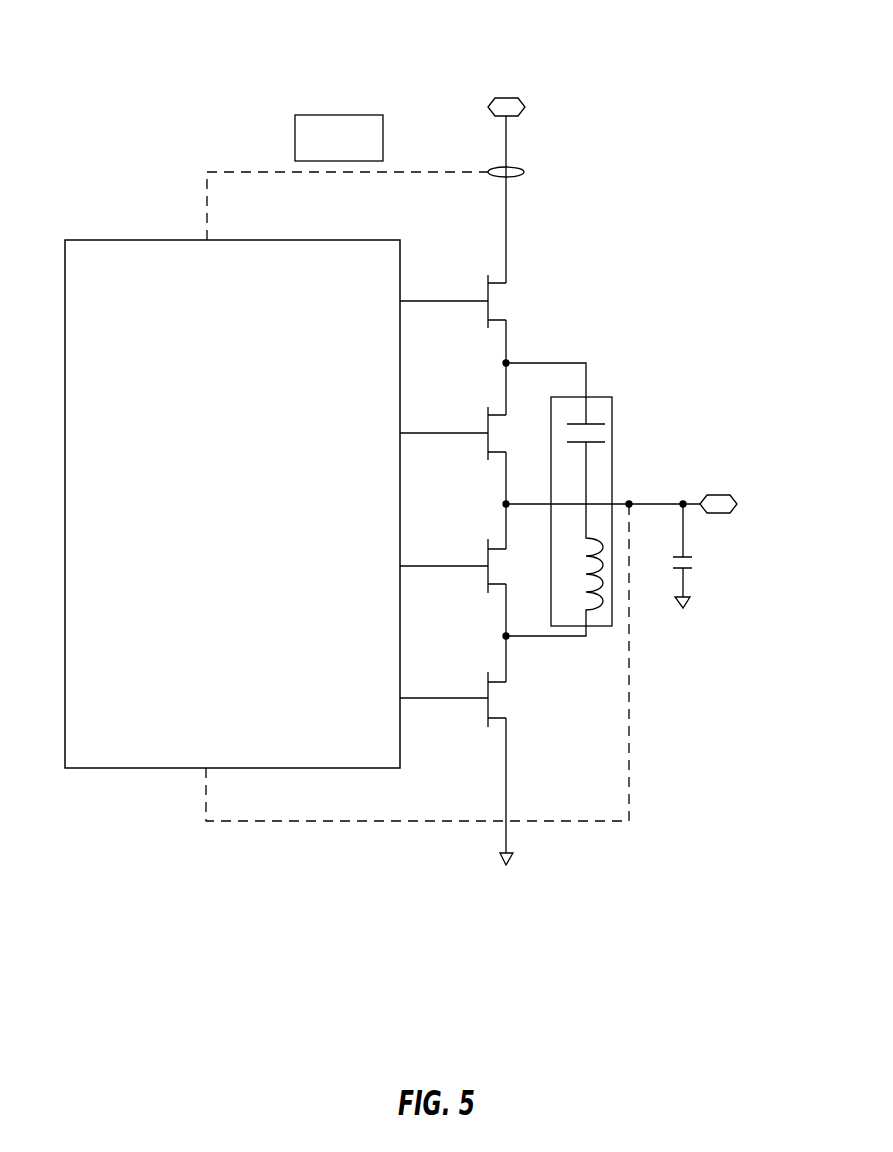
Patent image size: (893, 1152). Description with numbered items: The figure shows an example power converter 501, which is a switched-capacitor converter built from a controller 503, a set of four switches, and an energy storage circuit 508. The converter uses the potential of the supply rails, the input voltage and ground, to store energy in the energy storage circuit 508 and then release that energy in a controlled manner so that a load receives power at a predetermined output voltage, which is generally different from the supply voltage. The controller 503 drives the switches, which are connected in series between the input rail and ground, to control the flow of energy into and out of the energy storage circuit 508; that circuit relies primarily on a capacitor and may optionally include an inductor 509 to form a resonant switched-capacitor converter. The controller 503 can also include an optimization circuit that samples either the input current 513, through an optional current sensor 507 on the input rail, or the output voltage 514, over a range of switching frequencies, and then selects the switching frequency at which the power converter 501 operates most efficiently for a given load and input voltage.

The power converter 501 is at (546, 44).
The controller 503 is at (136, 770).
The current sensor 507 is at (522, 171).
The energy storage circuit 508 is at (612, 397).
The inductor 509 is at (600, 603).
The input current 513 is at (396, 172).
The output voltage 514 is at (343, 821).